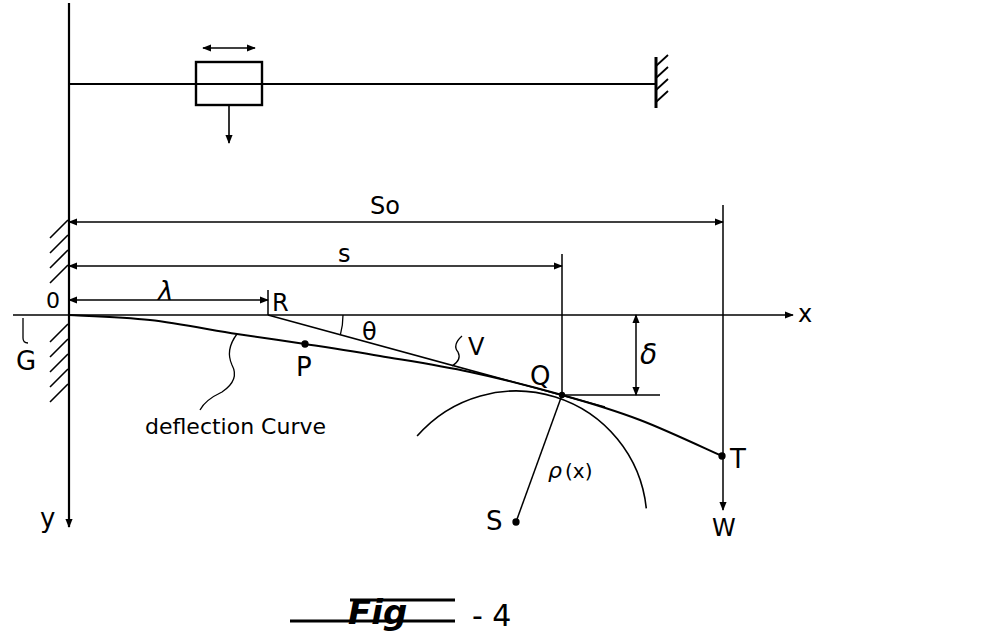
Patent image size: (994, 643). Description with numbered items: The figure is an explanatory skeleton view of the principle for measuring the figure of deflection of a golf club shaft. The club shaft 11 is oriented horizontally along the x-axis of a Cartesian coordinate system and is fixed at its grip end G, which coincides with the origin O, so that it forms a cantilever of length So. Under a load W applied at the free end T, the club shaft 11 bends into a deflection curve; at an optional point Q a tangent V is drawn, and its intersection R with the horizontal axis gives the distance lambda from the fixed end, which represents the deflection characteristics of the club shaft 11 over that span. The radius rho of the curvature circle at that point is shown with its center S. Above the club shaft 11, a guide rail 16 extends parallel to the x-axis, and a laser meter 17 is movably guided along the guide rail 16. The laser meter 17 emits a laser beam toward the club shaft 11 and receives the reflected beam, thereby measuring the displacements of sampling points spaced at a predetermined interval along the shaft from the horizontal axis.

The club shaft 11 is at (380, 357).
The guide rail 16 is at (490, 84).
The laser meter 17 is at (258, 75).